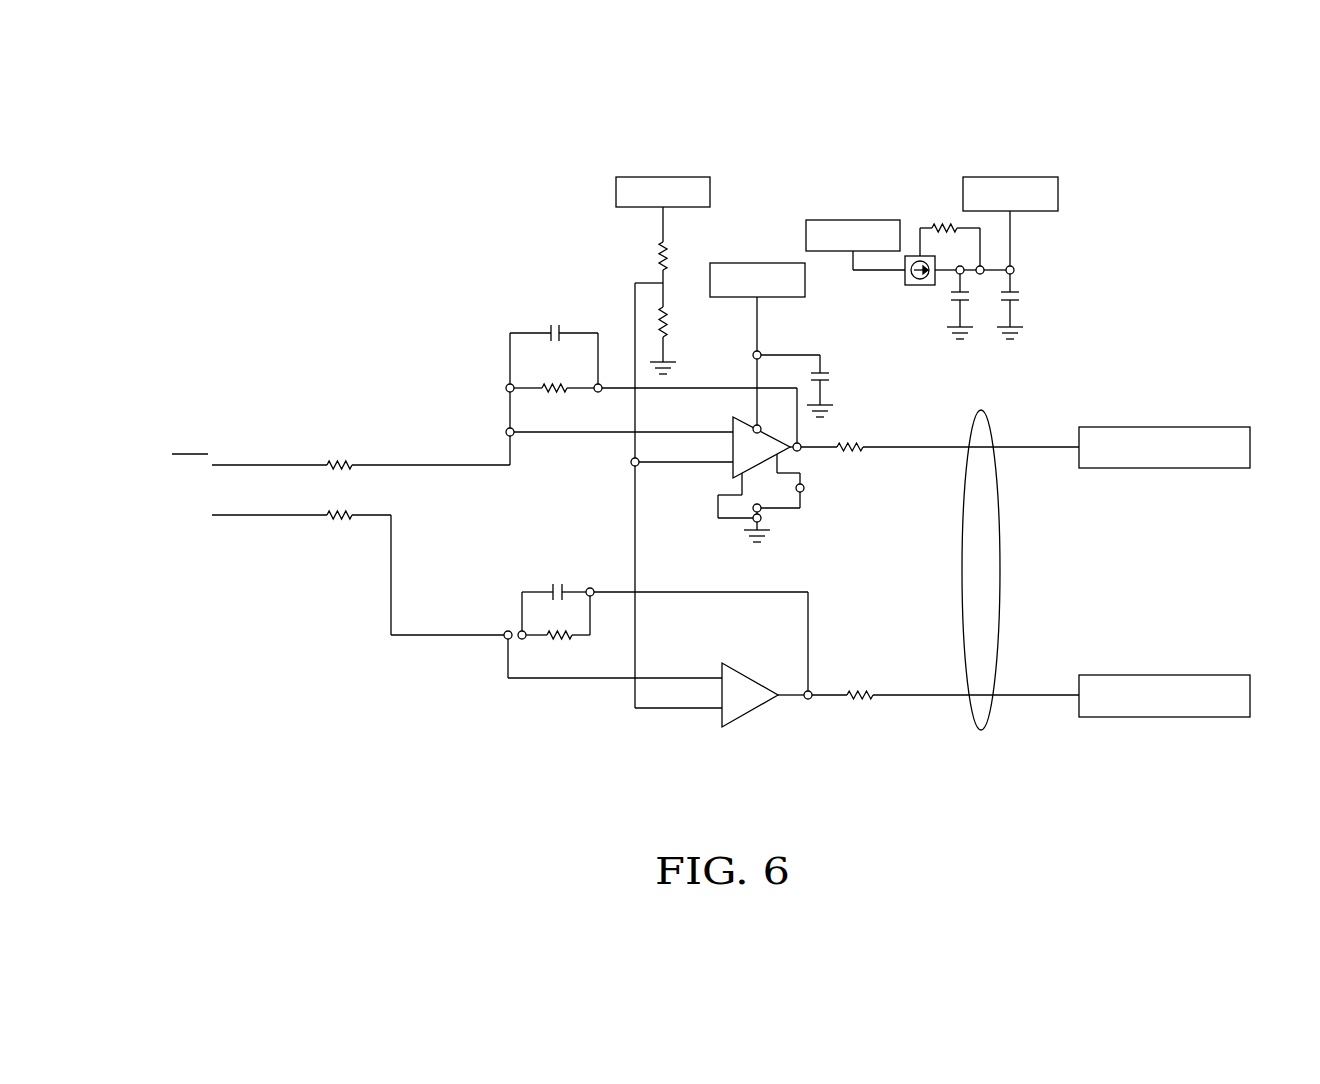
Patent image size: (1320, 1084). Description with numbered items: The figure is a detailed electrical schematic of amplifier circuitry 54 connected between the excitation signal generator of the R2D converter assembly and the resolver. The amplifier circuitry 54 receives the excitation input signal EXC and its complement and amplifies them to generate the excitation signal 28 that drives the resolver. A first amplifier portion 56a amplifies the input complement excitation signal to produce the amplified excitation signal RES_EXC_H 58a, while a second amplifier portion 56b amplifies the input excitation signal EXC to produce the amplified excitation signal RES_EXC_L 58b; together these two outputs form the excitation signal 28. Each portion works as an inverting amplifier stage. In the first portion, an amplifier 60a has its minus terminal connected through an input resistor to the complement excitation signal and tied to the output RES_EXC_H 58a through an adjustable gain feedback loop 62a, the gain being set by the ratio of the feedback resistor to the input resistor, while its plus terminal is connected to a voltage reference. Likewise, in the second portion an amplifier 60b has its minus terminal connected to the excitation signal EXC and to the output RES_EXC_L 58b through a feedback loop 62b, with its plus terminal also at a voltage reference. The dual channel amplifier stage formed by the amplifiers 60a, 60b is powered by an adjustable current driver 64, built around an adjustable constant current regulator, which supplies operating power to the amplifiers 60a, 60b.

The amplifier circuitry 54 is at (1100, 146).
The first amplifier portion 56a is at (420, 428).
The second amplifier portion 56b is at (408, 672).
The amplified excitation signal (RES_EXC_H) 58a is at (1165, 427).
The amplified excitation signal (RES_EXC_L) 58b is at (1165, 675).
The amplifier 60a is at (733, 473).
The amplifier 60b is at (722, 718).
The feedback loop 62a is at (680, 388).
The feedback loop 62b is at (782, 592).
The adjustable current driver 64 is at (872, 288).
The excitation signal 28 is at (993, 435).